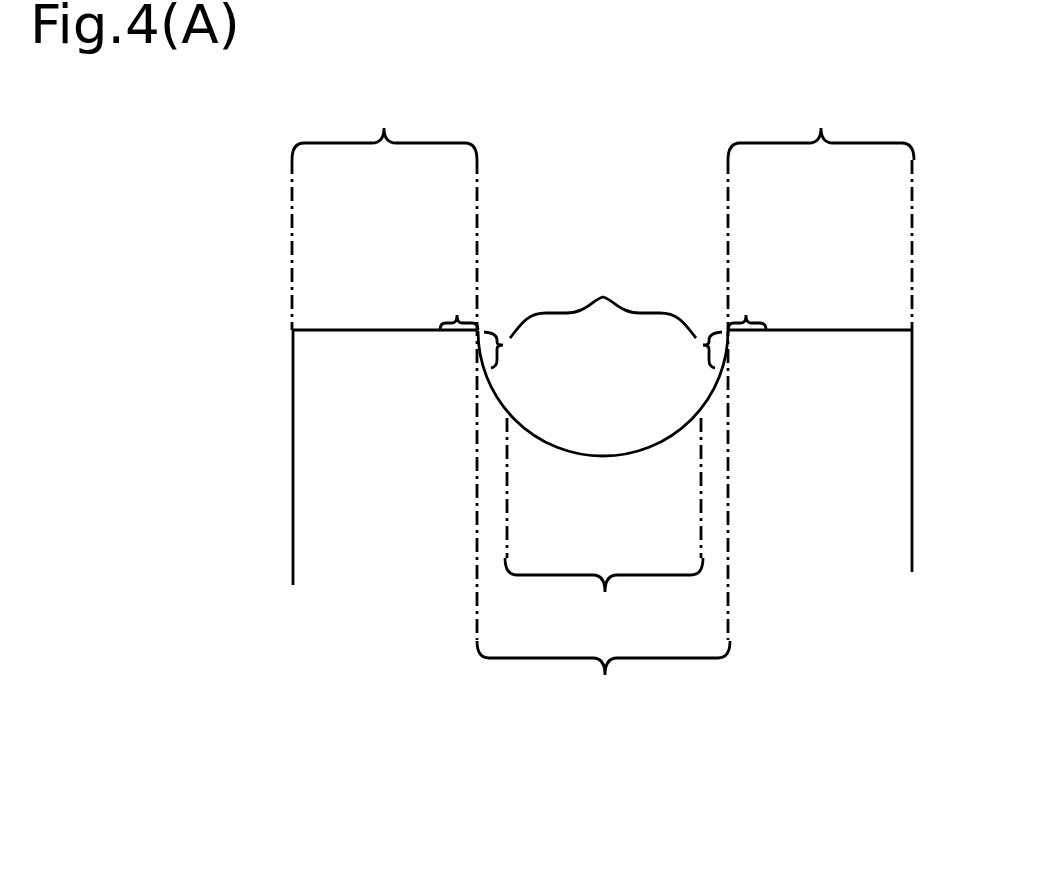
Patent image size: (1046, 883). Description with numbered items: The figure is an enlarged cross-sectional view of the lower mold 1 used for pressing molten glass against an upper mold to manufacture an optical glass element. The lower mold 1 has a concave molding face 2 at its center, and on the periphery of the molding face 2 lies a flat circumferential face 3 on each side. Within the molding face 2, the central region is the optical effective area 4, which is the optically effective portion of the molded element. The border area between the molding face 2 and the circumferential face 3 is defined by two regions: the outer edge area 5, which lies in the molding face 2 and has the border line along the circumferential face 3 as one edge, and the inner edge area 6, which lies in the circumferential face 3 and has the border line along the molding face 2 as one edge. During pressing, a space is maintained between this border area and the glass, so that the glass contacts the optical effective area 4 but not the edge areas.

The lower mold 1 is at (614, 92).
The molding face 2 is at (603, 440).
The circumferential face 3 is at (603, 206).
The optical effective area 4 is at (604, 526).
The outer edge area 5 is at (603, 359).
The inner edge area 6 is at (603, 317).